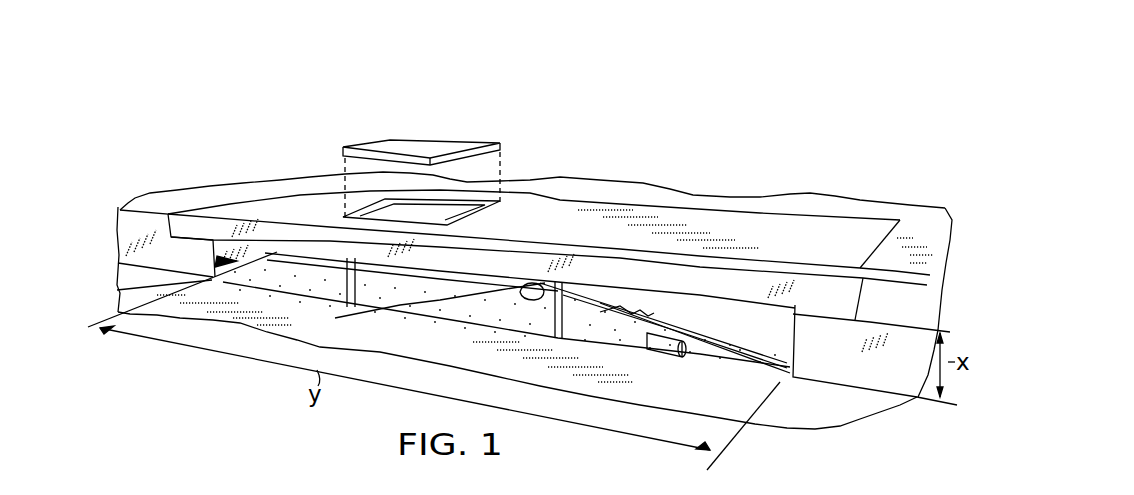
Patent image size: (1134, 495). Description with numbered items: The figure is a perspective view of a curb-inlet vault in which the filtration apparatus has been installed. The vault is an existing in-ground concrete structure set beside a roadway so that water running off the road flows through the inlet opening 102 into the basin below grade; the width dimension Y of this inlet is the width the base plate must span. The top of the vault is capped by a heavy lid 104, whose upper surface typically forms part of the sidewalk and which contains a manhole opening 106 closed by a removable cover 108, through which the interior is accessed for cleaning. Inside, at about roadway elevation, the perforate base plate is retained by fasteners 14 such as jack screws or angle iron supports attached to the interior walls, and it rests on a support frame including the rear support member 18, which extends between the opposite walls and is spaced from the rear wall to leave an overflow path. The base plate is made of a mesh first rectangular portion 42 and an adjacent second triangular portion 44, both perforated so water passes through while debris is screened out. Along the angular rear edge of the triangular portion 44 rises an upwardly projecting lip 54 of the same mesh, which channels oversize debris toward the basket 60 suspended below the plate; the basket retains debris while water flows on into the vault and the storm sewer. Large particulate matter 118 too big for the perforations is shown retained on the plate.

The fasteners 14 is at (273, 266).
The rear support member 18 is at (329, 266).
The first rectangular portion 42 is at (337, 290).
The second triangular portion 44 is at (532, 318).
The upwardly projecting lip 54 is at (715, 345).
The basket 60 is at (441, 293).
The inlet opening 102 is at (118, 297).
The lid 104 is at (752, 222).
The manhole opening 106 is at (400, 214).
The removable cover 108 is at (430, 146).
The large particulate matter 118 is at (528, 292).